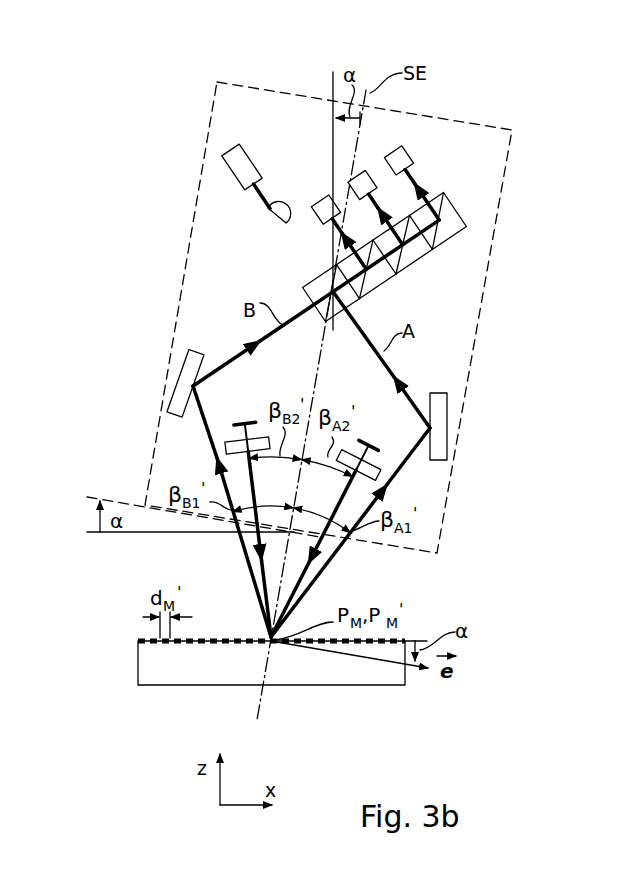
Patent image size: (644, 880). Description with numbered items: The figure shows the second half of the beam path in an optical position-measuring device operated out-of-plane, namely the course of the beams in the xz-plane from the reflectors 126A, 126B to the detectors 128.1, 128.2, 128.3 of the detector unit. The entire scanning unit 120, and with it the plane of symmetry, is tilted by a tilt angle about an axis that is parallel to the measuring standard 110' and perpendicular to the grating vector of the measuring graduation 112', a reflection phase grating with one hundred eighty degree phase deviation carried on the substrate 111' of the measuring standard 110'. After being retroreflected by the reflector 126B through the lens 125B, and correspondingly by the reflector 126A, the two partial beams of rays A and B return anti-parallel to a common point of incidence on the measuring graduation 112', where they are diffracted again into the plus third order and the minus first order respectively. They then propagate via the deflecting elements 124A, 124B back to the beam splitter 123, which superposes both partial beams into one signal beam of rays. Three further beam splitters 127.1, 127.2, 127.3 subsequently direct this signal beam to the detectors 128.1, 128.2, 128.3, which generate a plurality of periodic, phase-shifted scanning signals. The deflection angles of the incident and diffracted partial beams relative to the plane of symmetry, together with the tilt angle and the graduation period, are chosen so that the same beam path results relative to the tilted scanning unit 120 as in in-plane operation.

The scanning unit 120 is at (186, 215).
The beam splitter 123 is at (301, 287).
The deflecting element 124A is at (448, 420).
The deflecting element 124B is at (181, 383).
The lens 125B is at (224, 443).
The reflector 126A is at (380, 447).
The reflector 126B is at (240, 422).
The beam splitter 127.1 is at (386, 281).
The beam splitter 127.2 is at (412, 253).
The beam splitter 127.3 is at (456, 224).
The detector 128.1 is at (313, 205).
The detector 128.2 is at (350, 181).
The detector 128.3 is at (413, 160).
The measuring standard 110' is at (233, 691).
The substrate of measuring standard 111' is at (271, 694).
The measuring graduation 112' is at (233, 626).